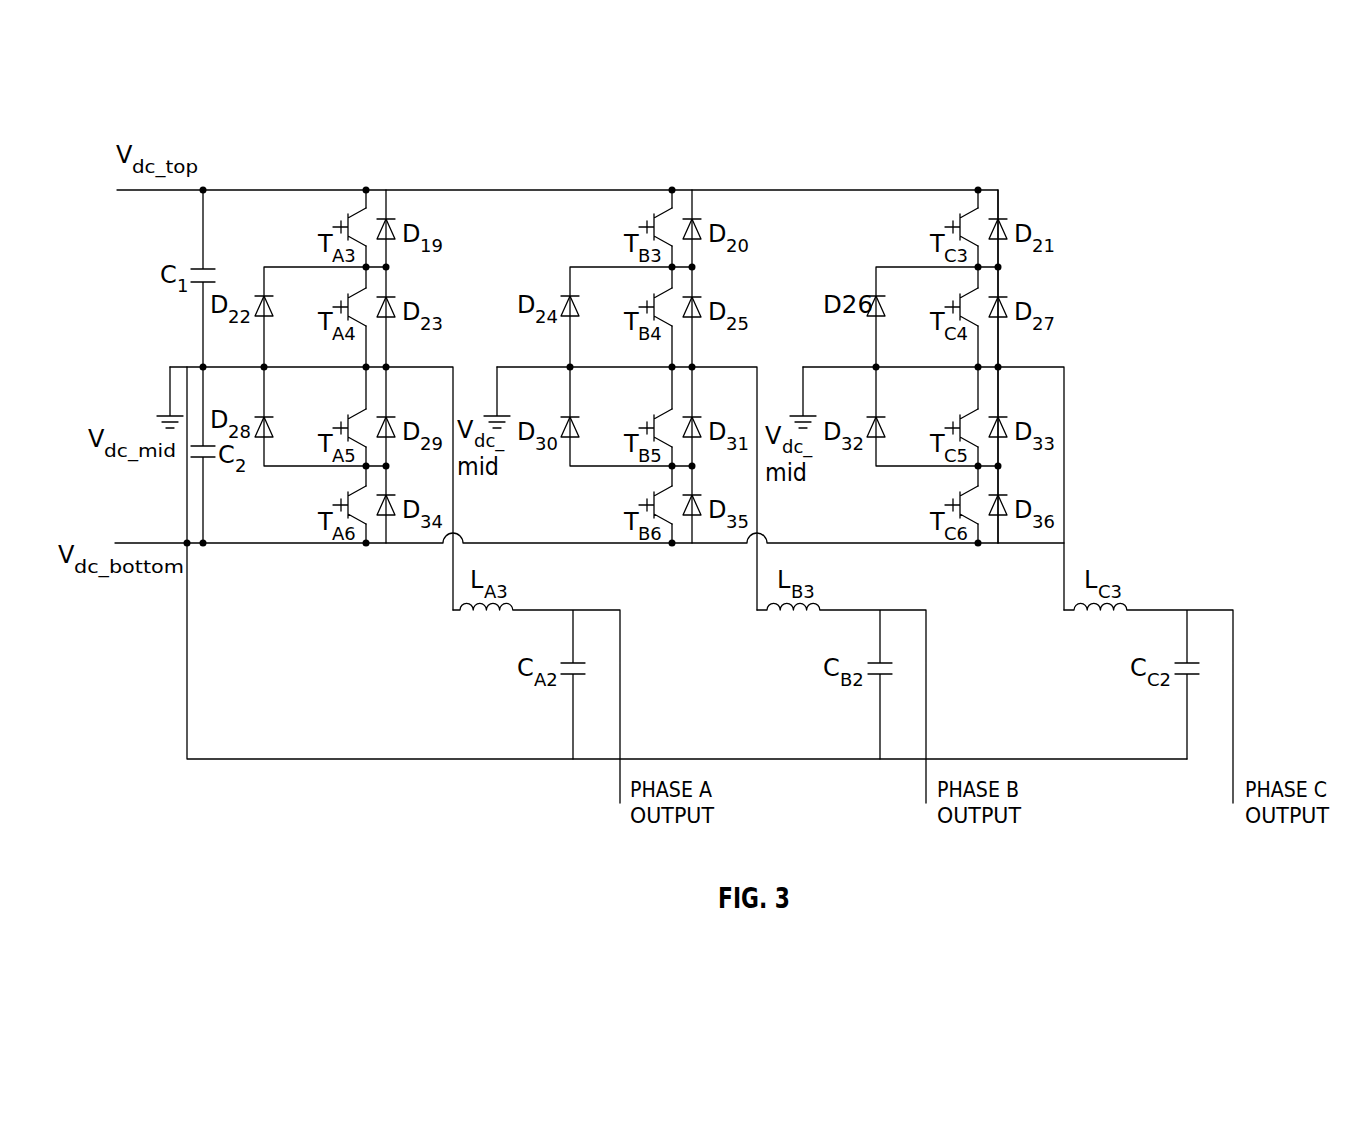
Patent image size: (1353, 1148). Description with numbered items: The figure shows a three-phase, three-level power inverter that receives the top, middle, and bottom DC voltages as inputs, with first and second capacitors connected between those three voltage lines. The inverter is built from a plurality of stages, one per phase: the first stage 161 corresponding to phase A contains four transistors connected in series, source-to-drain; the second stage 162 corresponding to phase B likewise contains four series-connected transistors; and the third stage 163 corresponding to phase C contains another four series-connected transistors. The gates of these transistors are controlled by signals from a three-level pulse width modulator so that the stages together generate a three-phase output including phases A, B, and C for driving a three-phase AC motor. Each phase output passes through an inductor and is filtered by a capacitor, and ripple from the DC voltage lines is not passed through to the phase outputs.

The first stage 161 is at (342, 161).
The second stage 162 is at (628, 161).
The third stage 163 is at (917, 161).